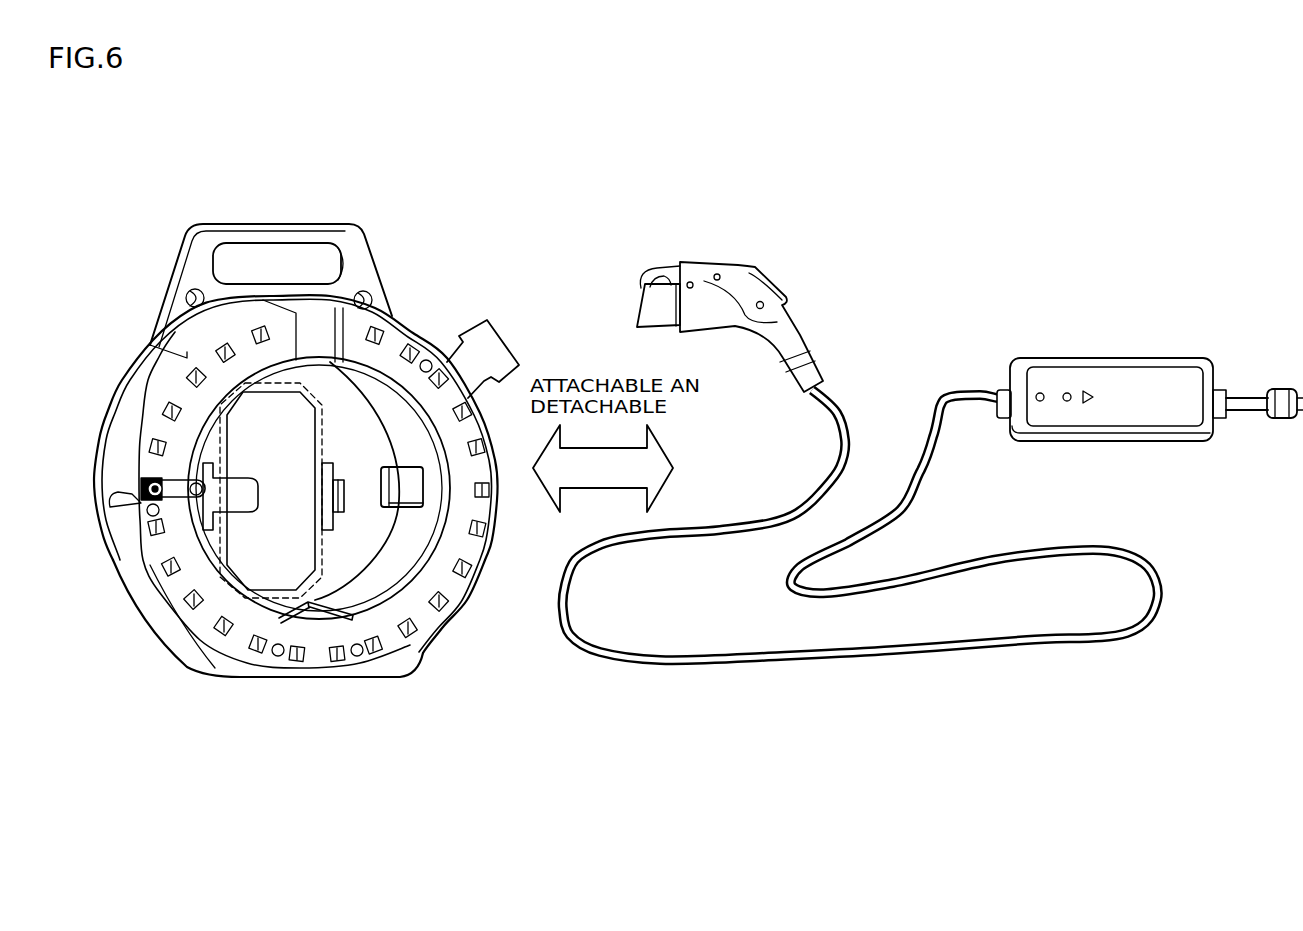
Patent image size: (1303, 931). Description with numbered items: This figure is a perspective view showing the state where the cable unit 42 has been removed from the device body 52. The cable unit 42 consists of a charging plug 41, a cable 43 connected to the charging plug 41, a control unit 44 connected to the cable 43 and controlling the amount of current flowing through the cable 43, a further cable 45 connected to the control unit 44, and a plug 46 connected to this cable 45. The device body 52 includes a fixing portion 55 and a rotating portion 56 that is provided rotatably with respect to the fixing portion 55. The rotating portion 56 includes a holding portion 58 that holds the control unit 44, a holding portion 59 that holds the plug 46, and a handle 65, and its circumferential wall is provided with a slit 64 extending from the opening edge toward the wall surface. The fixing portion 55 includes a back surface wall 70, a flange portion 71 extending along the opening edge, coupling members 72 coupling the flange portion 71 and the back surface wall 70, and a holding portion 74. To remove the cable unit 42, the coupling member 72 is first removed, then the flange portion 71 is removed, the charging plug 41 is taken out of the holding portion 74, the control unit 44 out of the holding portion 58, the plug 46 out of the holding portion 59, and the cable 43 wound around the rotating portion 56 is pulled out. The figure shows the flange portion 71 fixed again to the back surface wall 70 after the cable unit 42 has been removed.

The device body 52 is at (236, 186).
The fixing portion 55 is at (415, 294).
The rotating portion 56 is at (388, 398).
The back surface wall 70 is at (176, 262).
The flange portion 71 is at (190, 398).
The coupling member 72 is at (103, 503).
The handle 65 is at (153, 530).
The slit 64 is at (330, 608).
The holding portion 58 is at (337, 497).
The holding portion 59 is at (403, 492).
The holding portion 74 is at (492, 341).
The cable unit 42 is at (879, 209).
The charging plug 41 is at (707, 313).
The cable 43 is at (728, 654).
The control unit 44 is at (1132, 377).
The cable 45 is at (1247, 400).
The plug 46 is at (1288, 398).